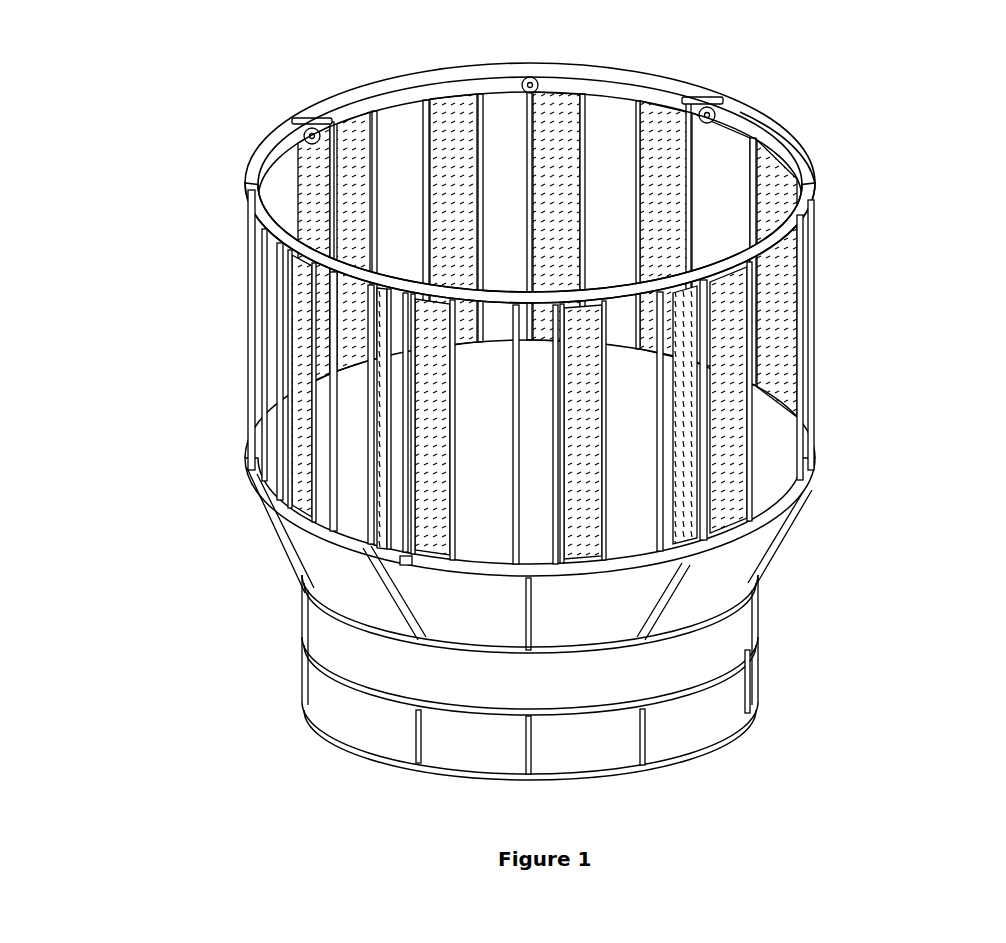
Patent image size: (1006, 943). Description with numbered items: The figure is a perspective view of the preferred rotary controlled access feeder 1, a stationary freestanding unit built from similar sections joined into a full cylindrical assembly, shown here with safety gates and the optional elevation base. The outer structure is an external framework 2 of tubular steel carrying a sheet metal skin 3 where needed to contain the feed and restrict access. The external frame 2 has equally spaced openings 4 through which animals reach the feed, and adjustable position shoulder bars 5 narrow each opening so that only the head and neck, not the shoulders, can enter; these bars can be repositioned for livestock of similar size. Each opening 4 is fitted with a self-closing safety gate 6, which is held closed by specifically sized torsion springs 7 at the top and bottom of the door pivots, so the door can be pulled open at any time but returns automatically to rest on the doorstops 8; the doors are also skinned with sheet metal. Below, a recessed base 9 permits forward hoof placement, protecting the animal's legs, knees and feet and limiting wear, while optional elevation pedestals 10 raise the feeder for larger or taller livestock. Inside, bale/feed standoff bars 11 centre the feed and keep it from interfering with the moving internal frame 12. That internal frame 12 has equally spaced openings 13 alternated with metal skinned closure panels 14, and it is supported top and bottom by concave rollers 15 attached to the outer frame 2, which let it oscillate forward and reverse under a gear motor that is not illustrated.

The rotary controlled access feeder 1 is at (186, 128).
The external framework 2 is at (247, 213).
The sheet metal skin 3 is at (260, 279).
The openings 4 is at (338, 412).
The shoulder bars 5 is at (355, 488).
The self-closing safety gate 6 is at (428, 548).
The torsion springs 7 is at (403, 561).
The doorstops 8 is at (432, 572).
The recessed base 9 is at (444, 649).
The elevation pedestals 10 is at (466, 779).
The bale/feed standoff bars 11 is at (692, 146).
The internal frame 12 is at (776, 156).
The openings 13 is at (724, 183).
The closure panels 14 is at (662, 232).
The concave rollers 15 is at (542, 84).